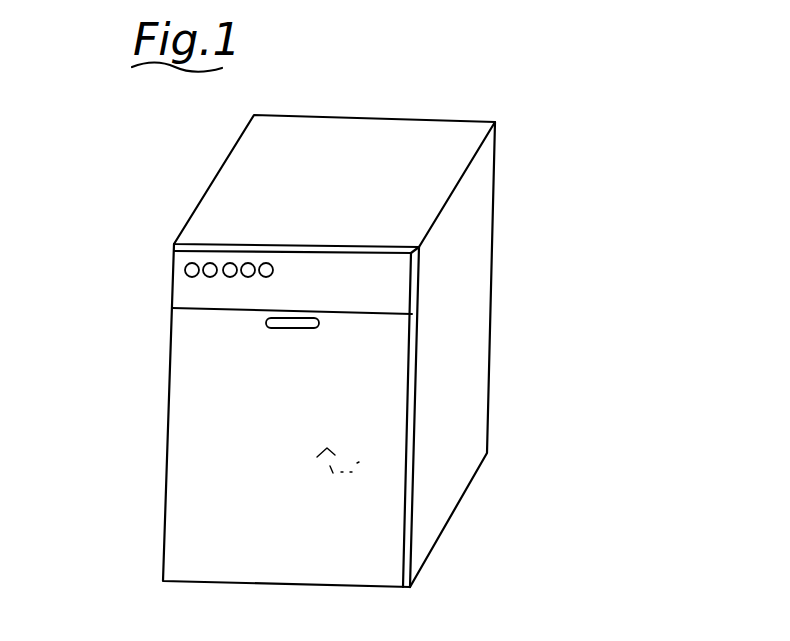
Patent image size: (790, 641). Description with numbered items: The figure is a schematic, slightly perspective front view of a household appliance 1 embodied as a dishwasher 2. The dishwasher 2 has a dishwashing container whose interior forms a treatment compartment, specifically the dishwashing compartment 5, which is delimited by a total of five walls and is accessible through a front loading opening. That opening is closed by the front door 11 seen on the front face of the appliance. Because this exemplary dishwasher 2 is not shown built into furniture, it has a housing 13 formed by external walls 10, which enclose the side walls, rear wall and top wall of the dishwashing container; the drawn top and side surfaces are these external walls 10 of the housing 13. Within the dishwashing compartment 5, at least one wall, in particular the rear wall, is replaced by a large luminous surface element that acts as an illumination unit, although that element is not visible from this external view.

The household appliance 1 is at (367, 305).
The dishwasher 2 is at (367, 305).
The dishwashing compartment 5 is at (362, 458).
The external walls 10 is at (397, 168).
The front door 11 is at (200, 395).
The housing 13 is at (473, 189).